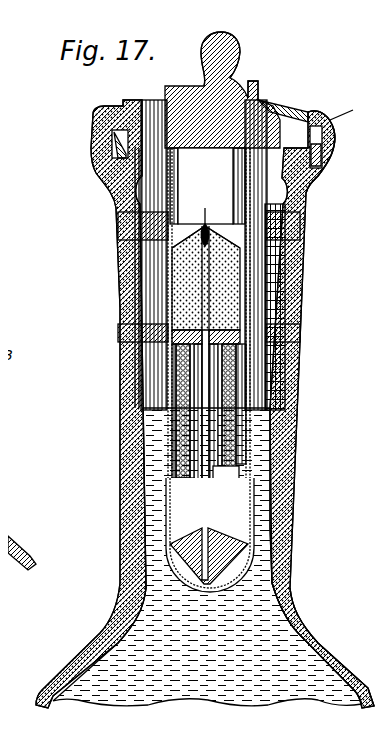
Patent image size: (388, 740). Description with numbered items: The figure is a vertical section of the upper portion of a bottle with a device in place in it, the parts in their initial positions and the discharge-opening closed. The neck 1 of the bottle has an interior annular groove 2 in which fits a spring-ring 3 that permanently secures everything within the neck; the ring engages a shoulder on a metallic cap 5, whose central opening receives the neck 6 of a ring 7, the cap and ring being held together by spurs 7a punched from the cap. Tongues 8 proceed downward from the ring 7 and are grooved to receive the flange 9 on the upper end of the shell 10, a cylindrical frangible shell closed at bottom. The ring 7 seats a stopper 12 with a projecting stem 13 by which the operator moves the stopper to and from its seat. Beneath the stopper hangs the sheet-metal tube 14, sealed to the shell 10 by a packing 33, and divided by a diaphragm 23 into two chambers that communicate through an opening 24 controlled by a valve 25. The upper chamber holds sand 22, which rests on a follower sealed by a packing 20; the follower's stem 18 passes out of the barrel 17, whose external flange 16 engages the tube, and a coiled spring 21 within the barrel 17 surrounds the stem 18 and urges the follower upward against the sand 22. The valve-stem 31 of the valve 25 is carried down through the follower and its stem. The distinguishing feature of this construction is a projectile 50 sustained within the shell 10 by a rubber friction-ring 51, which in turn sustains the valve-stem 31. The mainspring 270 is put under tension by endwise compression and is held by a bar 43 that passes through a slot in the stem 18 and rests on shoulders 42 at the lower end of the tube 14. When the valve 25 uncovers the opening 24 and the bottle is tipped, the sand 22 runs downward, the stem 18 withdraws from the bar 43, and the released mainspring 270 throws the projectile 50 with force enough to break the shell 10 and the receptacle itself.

The neck 1 is at (282, 612).
The annular groove 2 is at (312, 150).
The spring-ring 3 is at (330, 130).
The metallic cap 5 is at (300, 102).
The neck of ring 6 is at (249, 78).
The ring 7 is at (268, 96).
The spurs 7a is at (100, 458).
The tongues 8 is at (292, 200).
The flange 9 is at (302, 180).
The shell 10 is at (290, 271).
The stopper 12 is at (222, 90).
The stem 13 is at (216, 45).
The sheet-metal tube 14 is at (226, 186).
The external flange 16 is at (282, 358).
The barrel 17 is at (266, 414).
The stem of follower 18 is at (200, 506).
The packing 20 is at (286, 310).
The coiled spring 21 is at (286, 345).
The sand 22 is at (290, 246).
The diaphragm 23 is at (206, 233).
The opening 24 is at (188, 218).
The valve 25 is at (205, 213).
The valve-stem 31 is at (285, 292).
The packing 33 is at (296, 216).
The shoulders 42 is at (138, 472).
The bar 43 is at (226, 493).
The projectile 50 is at (246, 515).
The friction-ring 51 is at (244, 546).
The mainspring 270 is at (280, 375).